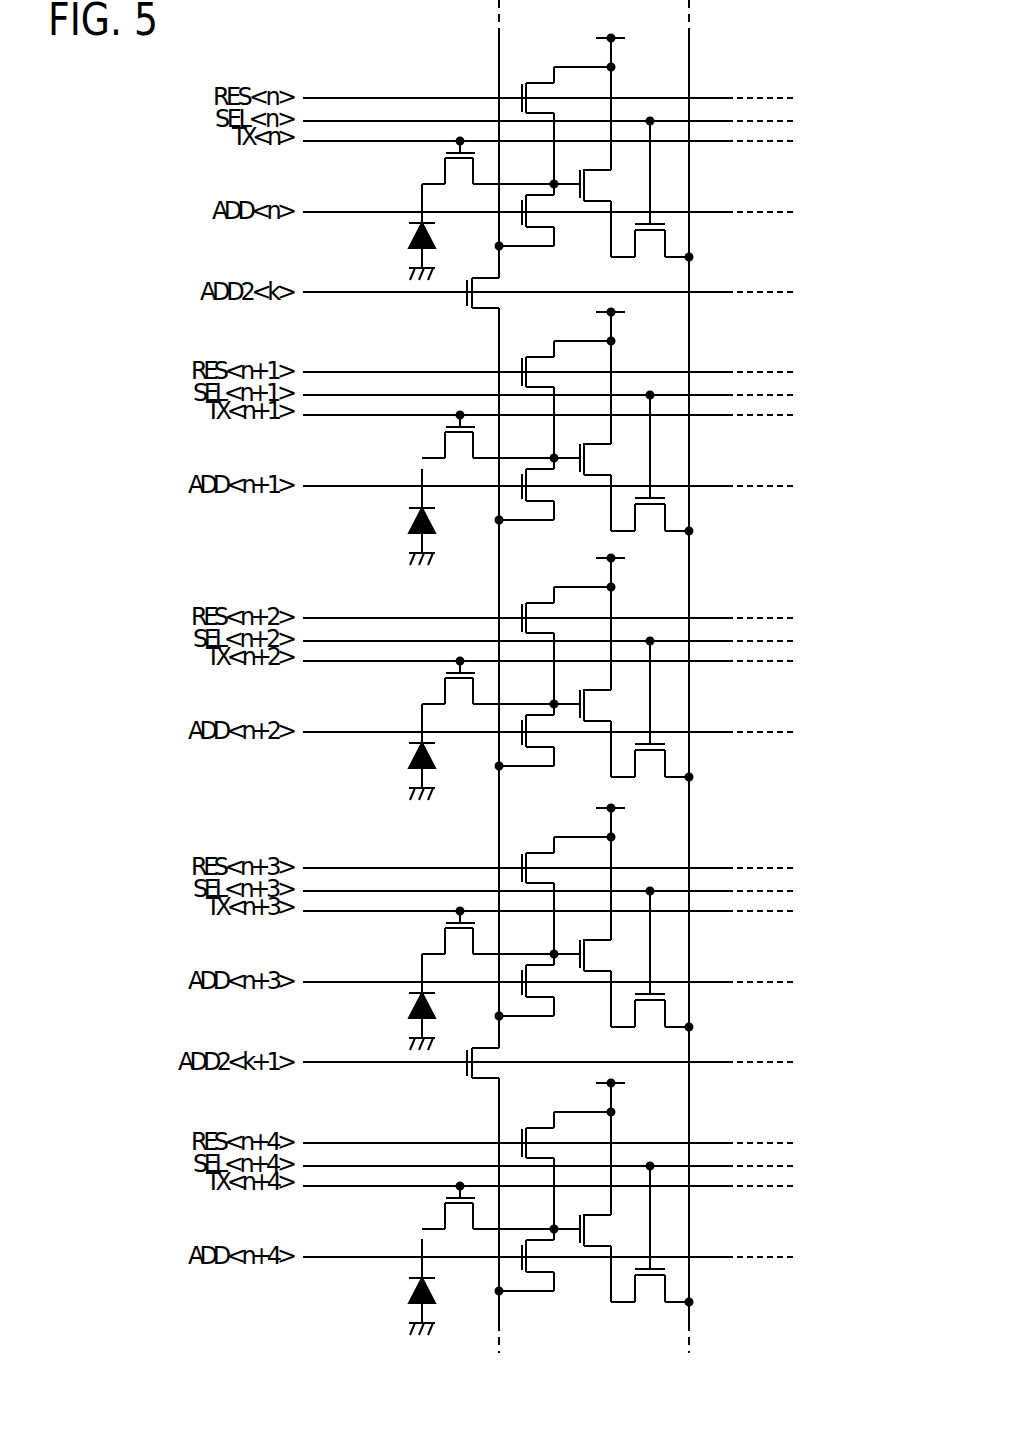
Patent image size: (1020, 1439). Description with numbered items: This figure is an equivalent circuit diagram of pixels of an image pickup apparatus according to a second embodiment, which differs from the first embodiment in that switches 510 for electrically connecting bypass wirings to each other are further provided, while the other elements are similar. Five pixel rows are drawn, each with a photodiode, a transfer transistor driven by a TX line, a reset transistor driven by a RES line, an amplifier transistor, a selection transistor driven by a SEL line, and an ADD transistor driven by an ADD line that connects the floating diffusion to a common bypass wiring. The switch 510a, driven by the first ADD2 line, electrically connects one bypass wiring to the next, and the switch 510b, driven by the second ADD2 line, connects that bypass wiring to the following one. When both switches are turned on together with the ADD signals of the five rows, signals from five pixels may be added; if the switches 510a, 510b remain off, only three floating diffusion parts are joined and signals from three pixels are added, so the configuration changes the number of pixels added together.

The switches 510 is at (548, 703).
The switch 510a is at (465, 297).
The switch 510b is at (465, 1067).